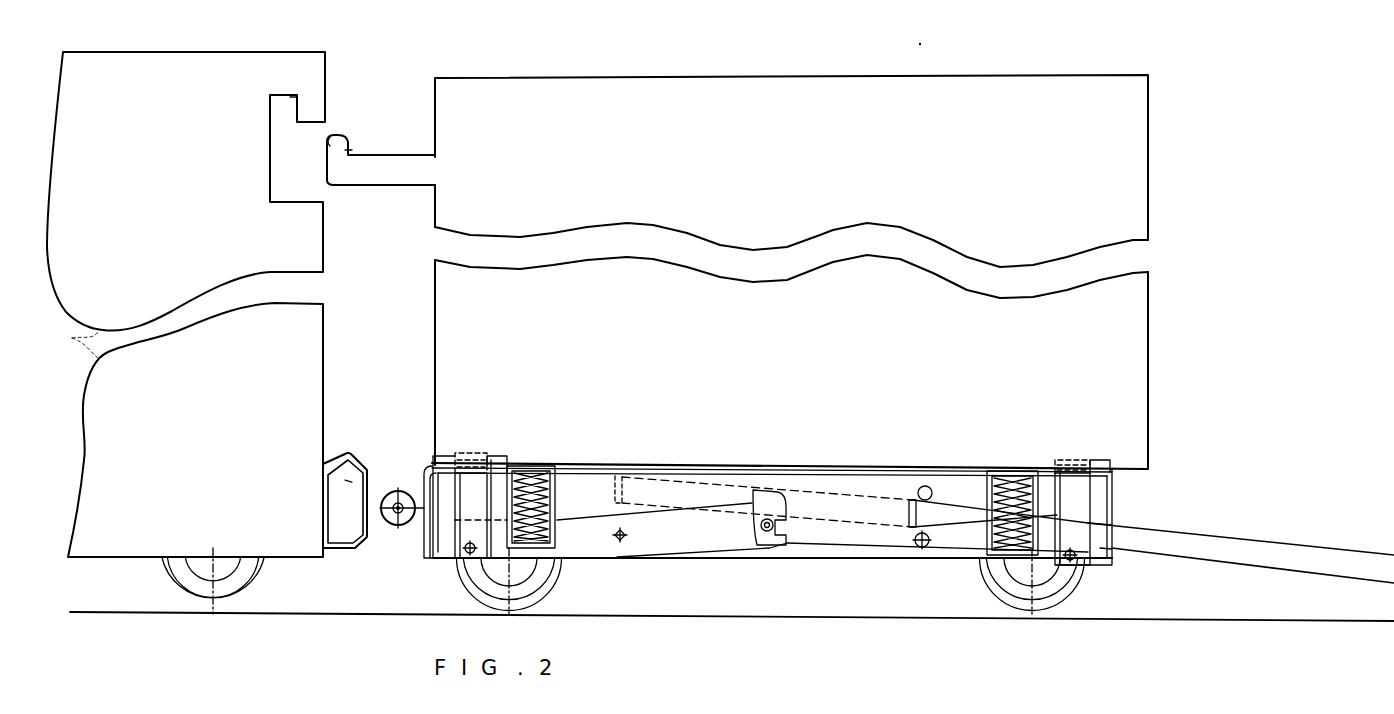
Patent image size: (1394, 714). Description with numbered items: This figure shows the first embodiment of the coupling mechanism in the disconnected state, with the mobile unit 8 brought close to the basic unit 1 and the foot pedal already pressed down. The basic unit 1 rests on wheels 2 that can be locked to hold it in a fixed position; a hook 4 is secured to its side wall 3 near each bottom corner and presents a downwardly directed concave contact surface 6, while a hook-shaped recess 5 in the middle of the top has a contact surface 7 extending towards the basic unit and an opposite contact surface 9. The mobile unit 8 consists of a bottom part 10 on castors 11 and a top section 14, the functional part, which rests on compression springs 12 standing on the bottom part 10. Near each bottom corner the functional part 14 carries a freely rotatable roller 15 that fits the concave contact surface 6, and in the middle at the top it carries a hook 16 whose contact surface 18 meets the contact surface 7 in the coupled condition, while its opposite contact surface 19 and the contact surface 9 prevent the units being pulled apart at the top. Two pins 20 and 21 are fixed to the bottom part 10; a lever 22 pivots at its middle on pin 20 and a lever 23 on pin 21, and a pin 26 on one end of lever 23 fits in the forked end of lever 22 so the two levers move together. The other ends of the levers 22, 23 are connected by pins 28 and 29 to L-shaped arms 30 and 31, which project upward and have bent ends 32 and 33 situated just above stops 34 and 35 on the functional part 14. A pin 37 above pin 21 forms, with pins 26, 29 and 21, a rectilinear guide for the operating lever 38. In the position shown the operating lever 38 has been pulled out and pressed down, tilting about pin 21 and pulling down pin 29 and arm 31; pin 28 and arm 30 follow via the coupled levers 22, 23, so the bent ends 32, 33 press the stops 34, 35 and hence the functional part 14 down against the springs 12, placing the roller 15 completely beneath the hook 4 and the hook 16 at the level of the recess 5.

The basic unit 1 is at (72, 338).
The wheels 2 is at (178, 583).
The side wall 3 is at (325, 322).
The hook 4 is at (358, 462).
The hook-shaped recess 5 is at (270, 168).
The concave contact surface 6 is at (352, 482).
The contact surface 7 is at (270, 118).
The mobile unit 8 is at (1224, 402).
The contact surface 9 is at (297, 97).
The bottom part 10 is at (1105, 558).
The castors 11 is at (538, 582).
The compression springs 12 is at (545, 475).
The top section 14 is at (1150, 232).
The roller 15 is at (392, 526).
The hook 16 is at (380, 180).
The contact surface 18 is at (327, 140).
The contact surface 19 is at (352, 150).
The pin 20 is at (615, 545).
The pin 21 is at (918, 548).
The lever 22 is at (700, 533).
The lever 23 is at (845, 540).
The pin 26 is at (777, 545).
The pin 28 is at (466, 552).
The pin 29 is at (1080, 560).
The L-shaped arm 30 is at (470, 492).
The L-shaped arm 31 is at (1078, 492).
The bent end 32 is at (470, 452).
The bent end 33 is at (1065, 455).
The stop 34 is at (497, 455).
The stop 35 is at (1112, 436).
The pin 37 is at (920, 487).
The operating lever 38 is at (1250, 543).